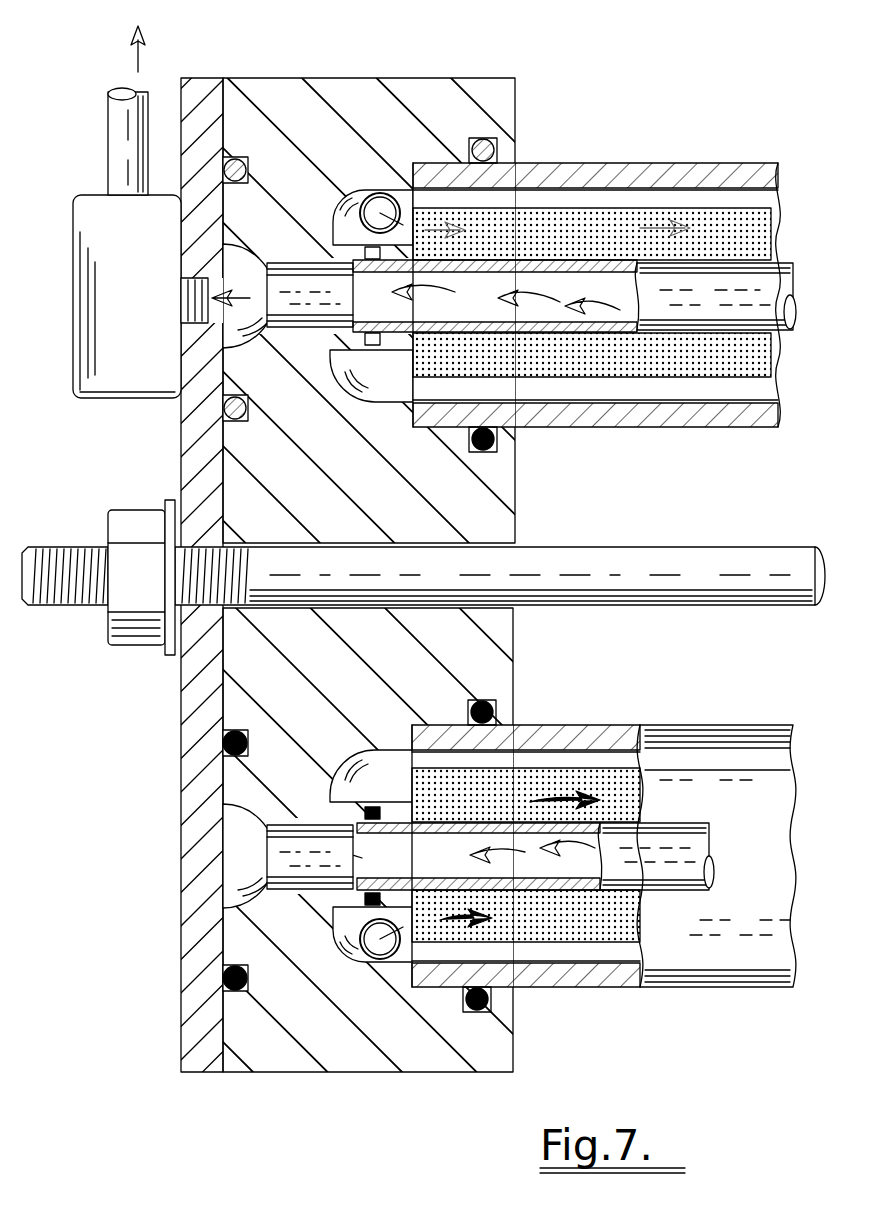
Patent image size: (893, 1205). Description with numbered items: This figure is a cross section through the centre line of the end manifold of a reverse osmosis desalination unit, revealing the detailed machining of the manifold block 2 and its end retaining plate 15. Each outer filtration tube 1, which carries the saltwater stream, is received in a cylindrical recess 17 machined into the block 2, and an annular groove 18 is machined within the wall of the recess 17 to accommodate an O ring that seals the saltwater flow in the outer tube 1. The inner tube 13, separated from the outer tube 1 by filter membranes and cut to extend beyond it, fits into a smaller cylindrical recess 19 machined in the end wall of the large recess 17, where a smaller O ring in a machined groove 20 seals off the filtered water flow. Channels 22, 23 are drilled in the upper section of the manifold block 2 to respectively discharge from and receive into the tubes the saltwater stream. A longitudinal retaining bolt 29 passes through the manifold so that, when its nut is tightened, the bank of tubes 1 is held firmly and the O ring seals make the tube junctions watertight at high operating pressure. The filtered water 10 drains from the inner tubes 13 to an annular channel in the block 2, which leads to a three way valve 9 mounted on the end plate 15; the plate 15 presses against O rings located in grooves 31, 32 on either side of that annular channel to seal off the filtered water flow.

The outer tube 1 is at (680, 163).
The end manifold block 2 is at (325, 78).
The three way valve 9 is at (161, 296).
The filtered water 10 is at (141, 99).
The inner tube 13 is at (776, 262).
The end retaining plate 15 is at (198, 78).
The cylindrical recess 17 is at (428, 163).
The annular groove 18 is at (492, 137).
The smaller cylindrical recess 19 is at (395, 350).
The machined groove 20 is at (333, 245).
The channel 22 is at (372, 205).
The channel 23 is at (380, 576).
The longitudinal retaining bolt 29 is at (680, 547).
The groove 31 is at (240, 421).
The groove 32 is at (243, 160).